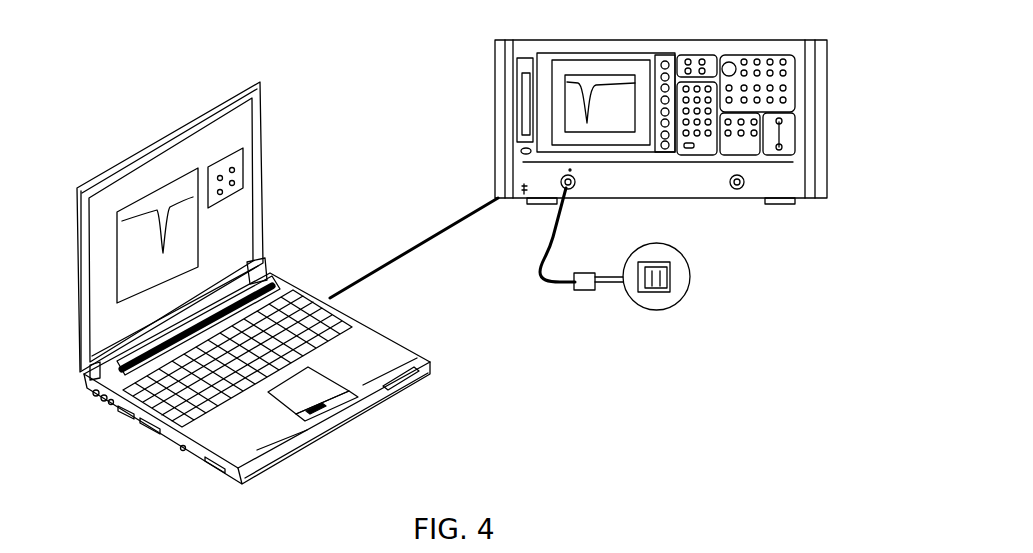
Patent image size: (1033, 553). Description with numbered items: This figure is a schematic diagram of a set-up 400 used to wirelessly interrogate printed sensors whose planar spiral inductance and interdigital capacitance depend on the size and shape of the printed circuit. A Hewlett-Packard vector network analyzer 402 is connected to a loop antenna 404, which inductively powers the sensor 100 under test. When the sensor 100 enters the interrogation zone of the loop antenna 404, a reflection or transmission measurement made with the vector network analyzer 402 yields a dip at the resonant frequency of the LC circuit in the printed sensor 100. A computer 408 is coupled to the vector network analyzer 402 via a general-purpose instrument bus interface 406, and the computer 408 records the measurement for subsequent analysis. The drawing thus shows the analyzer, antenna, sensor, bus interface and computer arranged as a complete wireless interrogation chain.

The set-up 400 is at (190, 54).
The vector network analyzer 402 is at (661, 107).
The loop antenna 404 is at (674, 250).
The sensor 100 is at (677, 283).
The general-purpose instrument bus (GPIB) interface 406 is at (413, 241).
The computer 408 is at (93, 393).